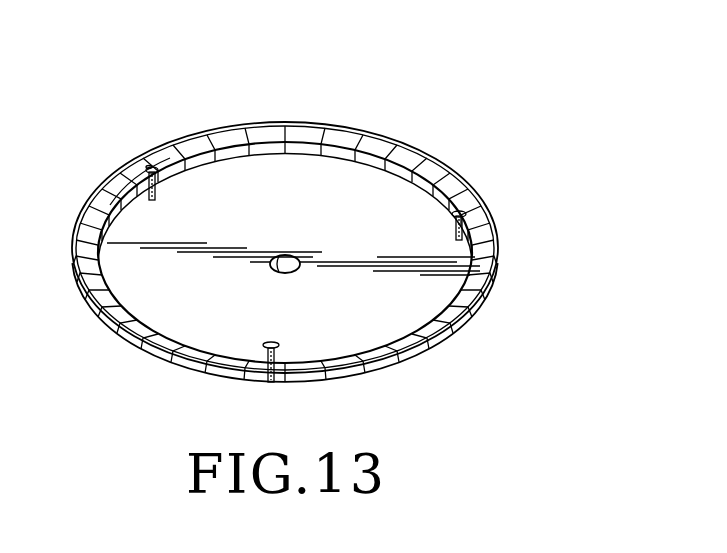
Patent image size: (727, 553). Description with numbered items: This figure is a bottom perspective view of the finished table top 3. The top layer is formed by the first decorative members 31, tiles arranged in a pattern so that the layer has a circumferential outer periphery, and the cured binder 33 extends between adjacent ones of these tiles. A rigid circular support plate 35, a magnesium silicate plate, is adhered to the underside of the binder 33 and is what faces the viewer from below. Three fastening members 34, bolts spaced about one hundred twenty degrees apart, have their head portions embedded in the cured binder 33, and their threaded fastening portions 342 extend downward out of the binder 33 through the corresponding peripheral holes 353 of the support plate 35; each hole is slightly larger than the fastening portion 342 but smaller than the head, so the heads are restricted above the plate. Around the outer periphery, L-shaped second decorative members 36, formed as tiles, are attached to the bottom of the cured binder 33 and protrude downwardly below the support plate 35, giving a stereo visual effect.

The table top 3 is at (593, 37).
The first decorative members 31 is at (443, 162).
The binder 33 is at (487, 200).
The fastening members 34 is at (170, 186).
The support plate 35 is at (430, 295).
The second decorative members 36 is at (312, 147).
The fastening portion 342 is at (150, 170).
The peripheral holes 353 is at (150, 165).